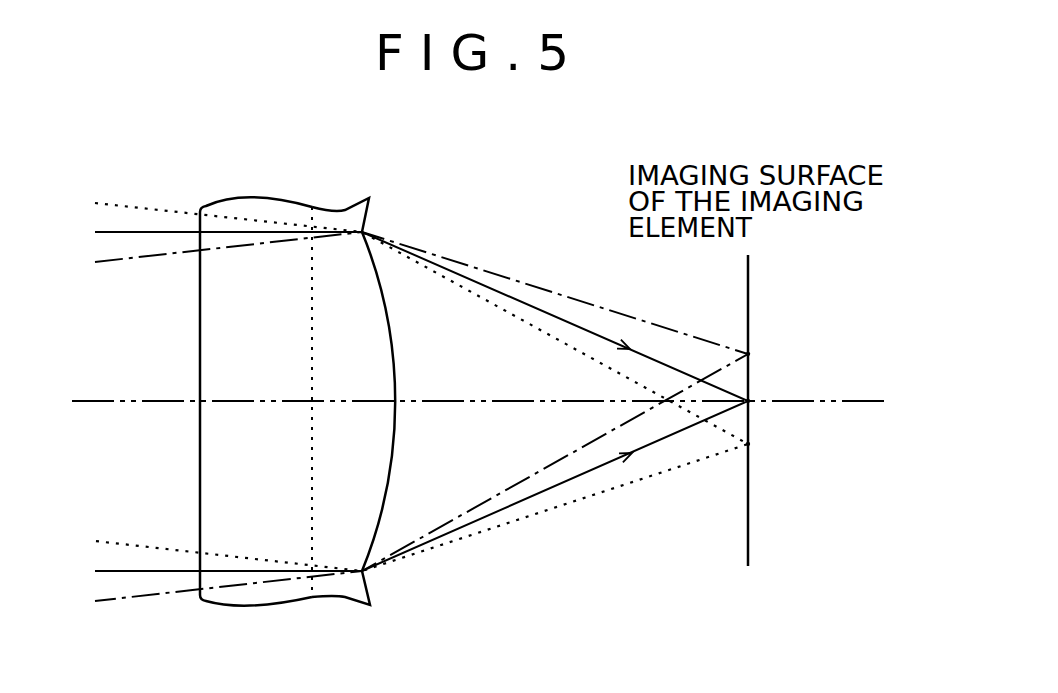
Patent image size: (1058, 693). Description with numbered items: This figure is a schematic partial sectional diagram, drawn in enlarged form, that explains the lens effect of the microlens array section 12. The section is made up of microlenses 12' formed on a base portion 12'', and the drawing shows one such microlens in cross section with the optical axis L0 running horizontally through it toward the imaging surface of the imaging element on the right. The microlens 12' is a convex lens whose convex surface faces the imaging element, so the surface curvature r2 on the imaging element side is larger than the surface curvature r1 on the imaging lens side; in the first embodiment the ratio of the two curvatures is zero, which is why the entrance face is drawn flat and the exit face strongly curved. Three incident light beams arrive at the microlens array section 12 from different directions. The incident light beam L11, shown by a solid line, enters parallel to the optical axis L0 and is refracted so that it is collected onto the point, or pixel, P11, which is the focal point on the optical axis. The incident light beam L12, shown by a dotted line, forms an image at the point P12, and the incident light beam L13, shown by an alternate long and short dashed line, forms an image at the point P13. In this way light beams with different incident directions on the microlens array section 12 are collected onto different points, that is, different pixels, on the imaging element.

The microlens array section 12 is at (297, 416).
The base portion 12'' is at (256, 373).
The microlens 12' is at (341, 373).
The curvature on the imaging lens side r1 is at (196, 347).
The curvature on the imaging element side r2 is at (404, 378).
The optical axis L0 is at (480, 385).
The incident light beam L11 is at (421, 401).
The incident light beam L12 is at (421, 387).
The incident light beam L13 is at (421, 416).
The point (pixel) P11 is at (771, 390).
The point (pixel) P12 is at (771, 453).
The point (pixel) P13 is at (771, 355).